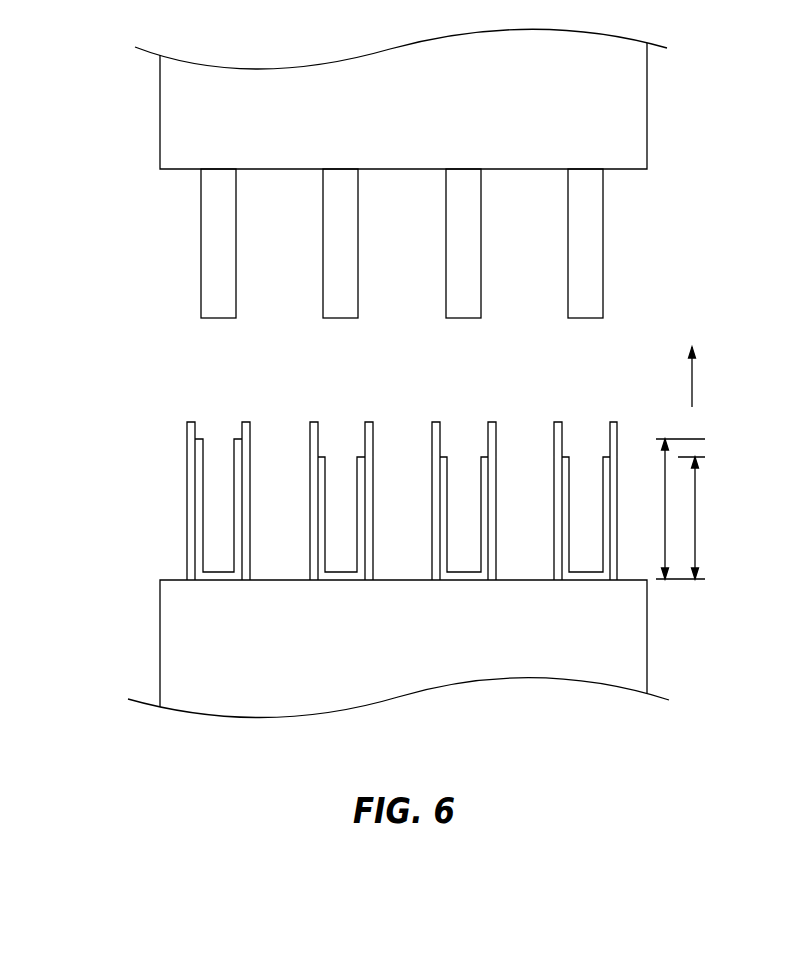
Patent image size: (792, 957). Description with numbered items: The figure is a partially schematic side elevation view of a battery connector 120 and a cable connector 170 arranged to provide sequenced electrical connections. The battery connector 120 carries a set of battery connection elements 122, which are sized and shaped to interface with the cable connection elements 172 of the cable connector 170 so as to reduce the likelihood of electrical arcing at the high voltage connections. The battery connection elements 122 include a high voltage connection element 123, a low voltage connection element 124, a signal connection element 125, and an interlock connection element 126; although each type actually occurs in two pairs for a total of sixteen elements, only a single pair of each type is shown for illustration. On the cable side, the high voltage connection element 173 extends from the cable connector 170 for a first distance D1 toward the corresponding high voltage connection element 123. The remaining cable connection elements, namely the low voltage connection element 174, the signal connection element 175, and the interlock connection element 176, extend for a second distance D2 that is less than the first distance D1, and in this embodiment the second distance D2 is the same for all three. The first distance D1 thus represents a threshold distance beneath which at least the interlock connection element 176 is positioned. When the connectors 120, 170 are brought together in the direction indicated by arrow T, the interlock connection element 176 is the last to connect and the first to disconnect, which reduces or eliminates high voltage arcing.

The battery connector 120 is at (160, 109).
The battery connection elements 122 is at (377, 243).
The high voltage connection element 123 is at (236, 230).
The low voltage connection element 124 is at (358, 230).
The signal connection element 125 is at (481, 230).
The interlock connection element 126 is at (603, 230).
The cable connector 170 is at (160, 645).
The cable connection elements 172 is at (346, 480).
The high voltage connection element 173 is at (200, 447).
The low voltage connection element 174 is at (323, 467).
The signal connection element 175 is at (448, 463).
The interlock connection element 176 is at (570, 463).
The first distance D1 is at (678, 509).
The second distance D2 is at (691, 518).
The arrow T is at (692, 378).